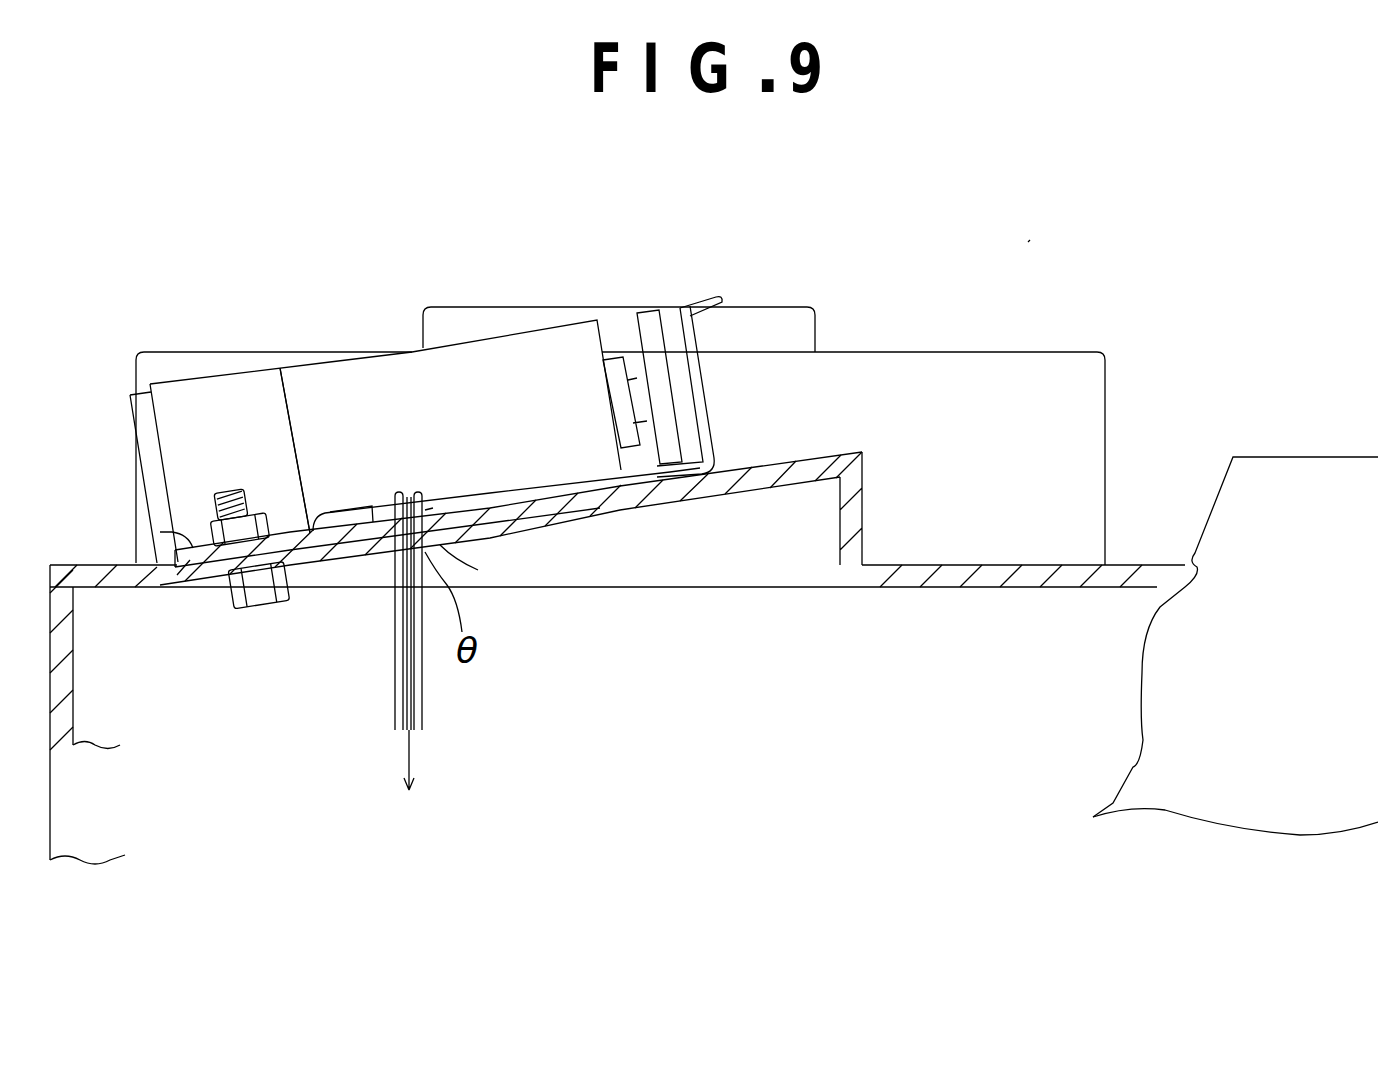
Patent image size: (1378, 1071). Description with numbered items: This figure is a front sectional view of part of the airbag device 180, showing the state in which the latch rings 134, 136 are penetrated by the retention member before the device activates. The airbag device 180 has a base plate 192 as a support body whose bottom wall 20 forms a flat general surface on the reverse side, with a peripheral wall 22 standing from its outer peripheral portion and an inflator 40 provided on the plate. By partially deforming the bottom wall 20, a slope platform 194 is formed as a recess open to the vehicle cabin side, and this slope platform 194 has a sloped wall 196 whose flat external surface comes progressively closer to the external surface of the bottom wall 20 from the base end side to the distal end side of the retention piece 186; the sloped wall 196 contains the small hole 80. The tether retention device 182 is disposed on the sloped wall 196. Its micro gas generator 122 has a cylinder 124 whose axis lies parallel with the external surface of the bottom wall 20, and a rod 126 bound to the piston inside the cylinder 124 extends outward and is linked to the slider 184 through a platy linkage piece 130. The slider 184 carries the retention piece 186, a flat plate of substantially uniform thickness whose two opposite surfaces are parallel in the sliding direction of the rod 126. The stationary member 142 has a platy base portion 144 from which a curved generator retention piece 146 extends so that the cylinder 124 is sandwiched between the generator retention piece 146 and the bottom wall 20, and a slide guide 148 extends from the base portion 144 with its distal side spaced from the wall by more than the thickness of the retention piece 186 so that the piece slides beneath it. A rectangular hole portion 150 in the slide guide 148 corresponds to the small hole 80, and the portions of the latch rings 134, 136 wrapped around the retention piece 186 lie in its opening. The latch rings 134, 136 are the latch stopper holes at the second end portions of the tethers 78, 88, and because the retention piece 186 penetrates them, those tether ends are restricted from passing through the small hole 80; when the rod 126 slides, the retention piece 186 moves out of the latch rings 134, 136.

The bottom wall 20 is at (992, 552).
The peripheral wall 22 is at (73, 672).
The inflator 40 is at (975, 352).
The tether 78 is at (306, 607).
The small hole 80 is at (478, 570).
The tether 88 is at (493, 641).
The micro gas generator 122 is at (318, 382).
The cylinder 124 is at (413, 367).
The rod 126 is at (632, 366).
The linkage piece 130 is at (661, 320).
The latch ring 134 is at (393, 667).
The latch ring 136 is at (430, 688).
The stationary member 142 is at (305, 436).
The base portion 144 is at (160, 532).
The generator retention piece 146 is at (231, 385).
The slide guide 148 is at (478, 485).
The hole portion 150 is at (432, 497).
The airbag device 180 is at (1028, 242).
The tether retention device 182 is at (718, 396).
The slider 184 is at (712, 297).
The retention piece 186 is at (556, 488).
The base plate 192 is at (1148, 557).
The slope platform 194 is at (868, 488).
The sloped wall 196 is at (848, 450).